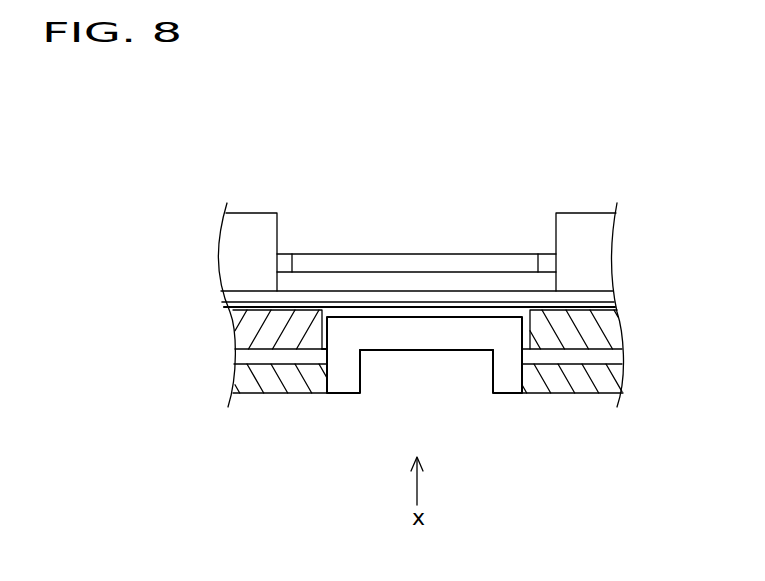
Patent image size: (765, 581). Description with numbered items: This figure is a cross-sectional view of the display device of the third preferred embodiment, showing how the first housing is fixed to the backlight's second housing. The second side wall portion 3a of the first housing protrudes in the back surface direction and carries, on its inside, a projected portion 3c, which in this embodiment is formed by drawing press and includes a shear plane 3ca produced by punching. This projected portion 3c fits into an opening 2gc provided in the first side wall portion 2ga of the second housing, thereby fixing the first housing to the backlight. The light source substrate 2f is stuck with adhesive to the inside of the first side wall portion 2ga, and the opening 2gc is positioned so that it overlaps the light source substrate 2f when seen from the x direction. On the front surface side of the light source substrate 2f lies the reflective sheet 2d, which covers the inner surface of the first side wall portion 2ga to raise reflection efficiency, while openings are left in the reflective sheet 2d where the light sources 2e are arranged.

The reflective sheet 2d is at (357, 267).
The light source 2e is at (227, 255).
The light source substrate 2f is at (600, 299).
The first side wall portion 2ga is at (237, 337).
The opening 2gc is at (438, 310).
The second side wall portion 3a is at (270, 383).
The projected portion 3c is at (451, 375).
The shear plane 3ca is at (388, 343).